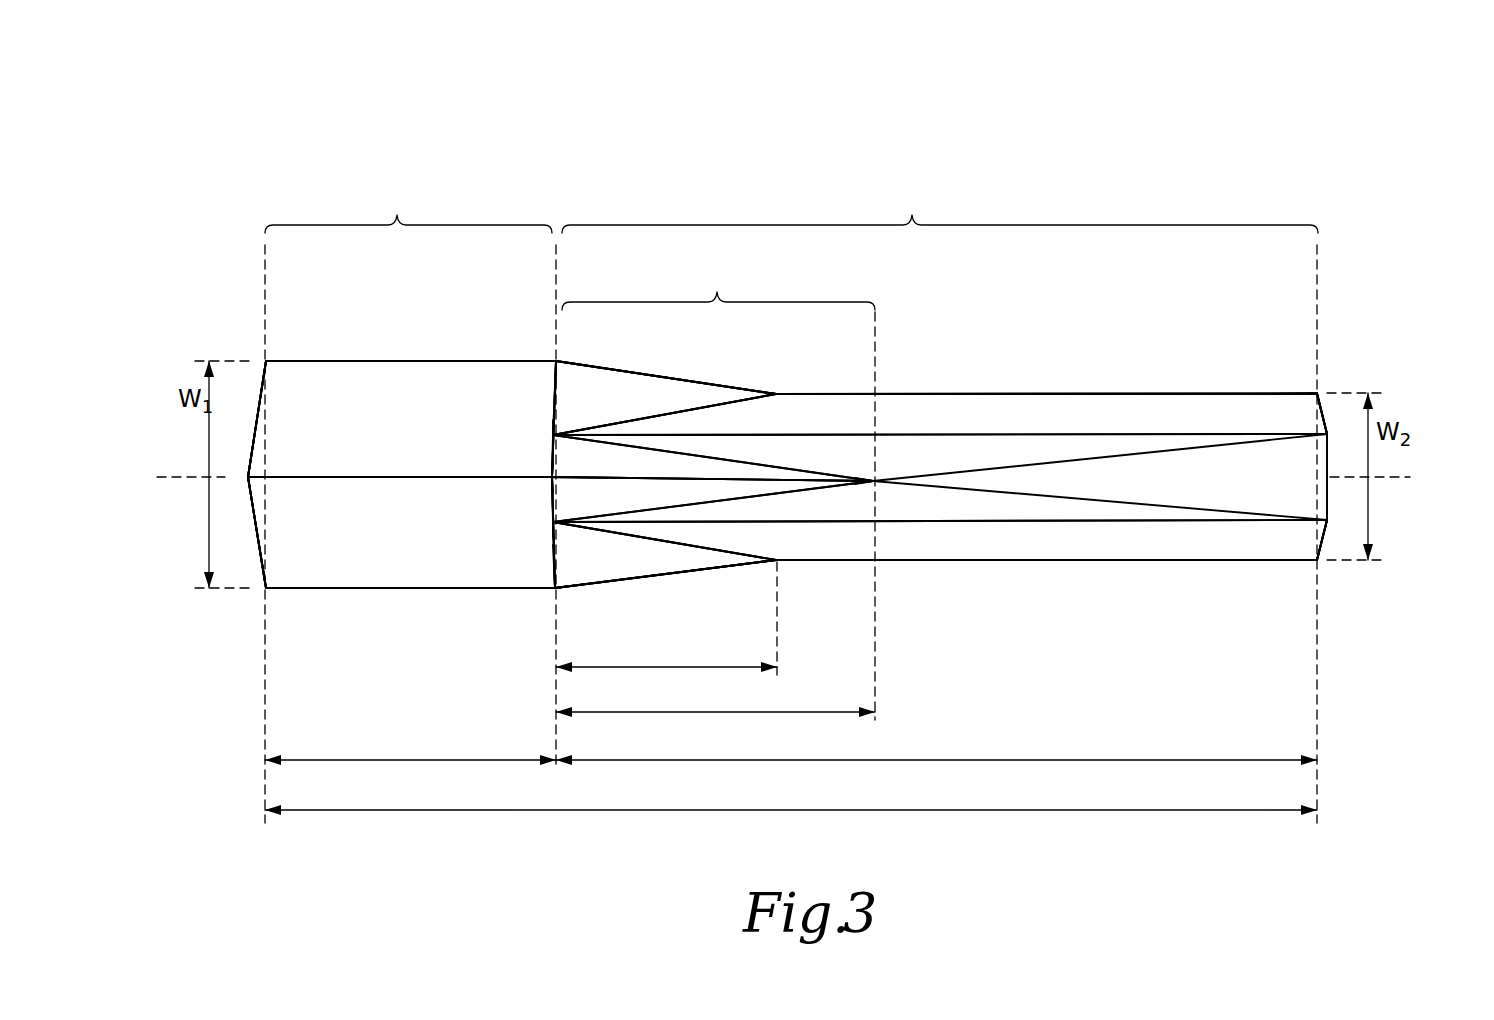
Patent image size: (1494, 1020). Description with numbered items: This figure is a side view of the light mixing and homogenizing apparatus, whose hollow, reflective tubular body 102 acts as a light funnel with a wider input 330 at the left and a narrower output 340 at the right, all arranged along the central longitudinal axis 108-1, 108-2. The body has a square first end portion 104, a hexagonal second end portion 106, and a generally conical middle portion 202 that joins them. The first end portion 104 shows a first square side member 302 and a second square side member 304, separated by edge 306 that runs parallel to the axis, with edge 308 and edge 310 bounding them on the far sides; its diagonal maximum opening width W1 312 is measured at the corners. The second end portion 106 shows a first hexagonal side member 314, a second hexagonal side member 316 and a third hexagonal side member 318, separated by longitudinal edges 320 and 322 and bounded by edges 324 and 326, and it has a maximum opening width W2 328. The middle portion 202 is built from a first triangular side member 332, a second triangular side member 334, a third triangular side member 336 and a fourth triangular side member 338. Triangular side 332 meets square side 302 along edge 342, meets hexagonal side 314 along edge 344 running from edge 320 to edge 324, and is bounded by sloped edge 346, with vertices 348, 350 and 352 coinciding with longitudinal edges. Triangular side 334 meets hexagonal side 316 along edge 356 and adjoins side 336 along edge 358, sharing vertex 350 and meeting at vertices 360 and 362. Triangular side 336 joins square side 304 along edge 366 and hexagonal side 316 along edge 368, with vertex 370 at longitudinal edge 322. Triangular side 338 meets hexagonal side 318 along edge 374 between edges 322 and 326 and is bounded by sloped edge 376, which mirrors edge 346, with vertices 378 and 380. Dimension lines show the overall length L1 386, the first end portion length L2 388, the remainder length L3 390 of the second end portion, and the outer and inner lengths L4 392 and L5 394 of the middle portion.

The tubular body 102 is at (508, 112).
The first end portion 104 is at (397, 215).
The second end portion 106 is at (912, 215).
The middle portion 202 is at (717, 292).
The longitudinal axis 108-1 is at (188, 478).
The longitudinal axis 108-2 is at (1353, 478).
The first square side member 302 is at (401, 423).
The second square side member 304 is at (386, 556).
The edge 306 is at (358, 478).
The edge 308 is at (400, 361).
The edge 310 is at (380, 588).
The maximum opening width W1 312 is at (209, 428).
The first hexagonal side member 314 is at (1064, 424).
The second hexagonal side member 316 is at (1064, 494).
The third hexagonal side member 318 is at (1064, 553).
The edge 320 is at (1237, 433).
The edge 322 is at (1253, 522).
The edge 324 is at (1130, 393).
The edge 326 is at (1100, 562).
The maximum opening width W2 328 is at (1365, 447).
The input 330 is at (178, 527).
The first triangular side member 332 is at (619, 408).
The second triangular side member 334 is at (596, 466).
The third triangular side member 336 is at (614, 504).
The fourth triangular side member 338 is at (619, 568).
The output 340 is at (1408, 530).
The edge 342 is at (553, 398).
The edge 344 is at (718, 407).
The edge 346 is at (662, 373).
The first vertex 348 is at (560, 358).
The second vertex 350 is at (556, 435).
The third vertex 352 is at (777, 395).
The edge 356 is at (803, 468).
The edge 358 is at (697, 477).
The second vertex 360 is at (553, 478).
The third vertex 362 is at (873, 481).
The edge 366 is at (553, 562).
The edge 368 is at (775, 495).
The second vertex 370 is at (556, 522).
The edge 374 is at (702, 547).
The edge 376 is at (672, 576).
The second vertex 378 is at (565, 590).
The third vertex 380 is at (772, 565).
The overall length L1 386 is at (695, 810).
The length L2 388 is at (432, 760).
The remainder length L3 390 is at (695, 760).
The outer length L4 392 is at (695, 712).
The inner length L5 394 is at (695, 667).